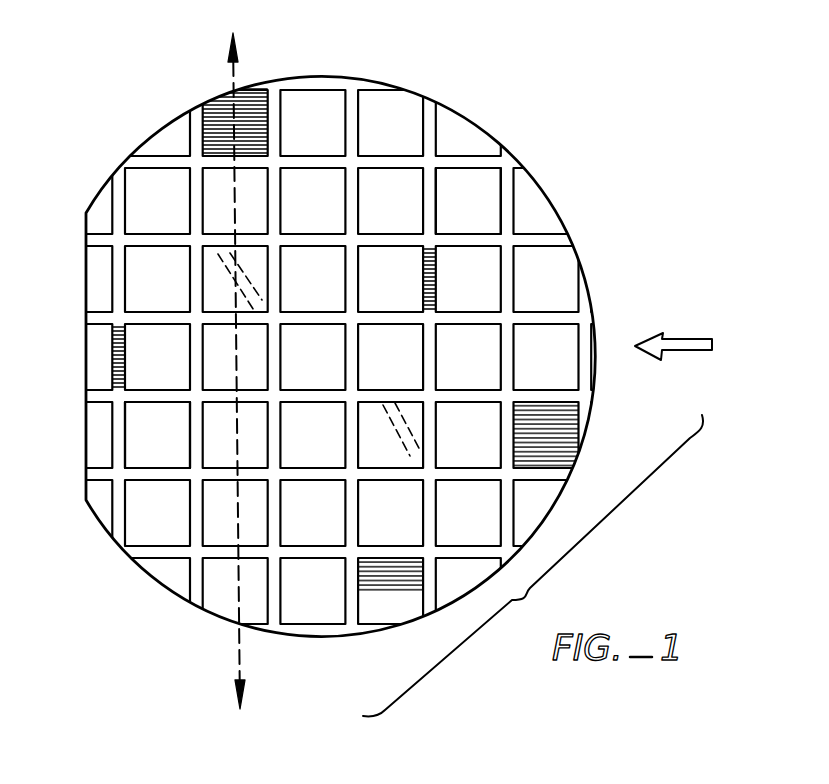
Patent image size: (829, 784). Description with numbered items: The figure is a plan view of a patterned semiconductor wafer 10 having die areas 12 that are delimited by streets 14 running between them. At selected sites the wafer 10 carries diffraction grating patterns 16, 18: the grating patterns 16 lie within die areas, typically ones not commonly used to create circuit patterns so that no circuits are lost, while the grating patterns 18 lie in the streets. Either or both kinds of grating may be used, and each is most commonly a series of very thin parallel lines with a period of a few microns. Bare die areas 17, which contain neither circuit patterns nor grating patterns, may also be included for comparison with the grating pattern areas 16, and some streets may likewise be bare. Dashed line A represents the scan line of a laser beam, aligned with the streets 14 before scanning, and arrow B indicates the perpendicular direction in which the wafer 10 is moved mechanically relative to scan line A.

The patterned wafer 10 is at (548, 203).
The die areas 12 is at (468, 180).
The streets 14 is at (347, 123).
The diffraction grating patterns 16 is at (250, 95).
The bare die areas 17 is at (245, 282).
The diffraction grating patterns 18 is at (432, 278).
The scan line A is at (239, 648).
The arrow B is at (668, 352).